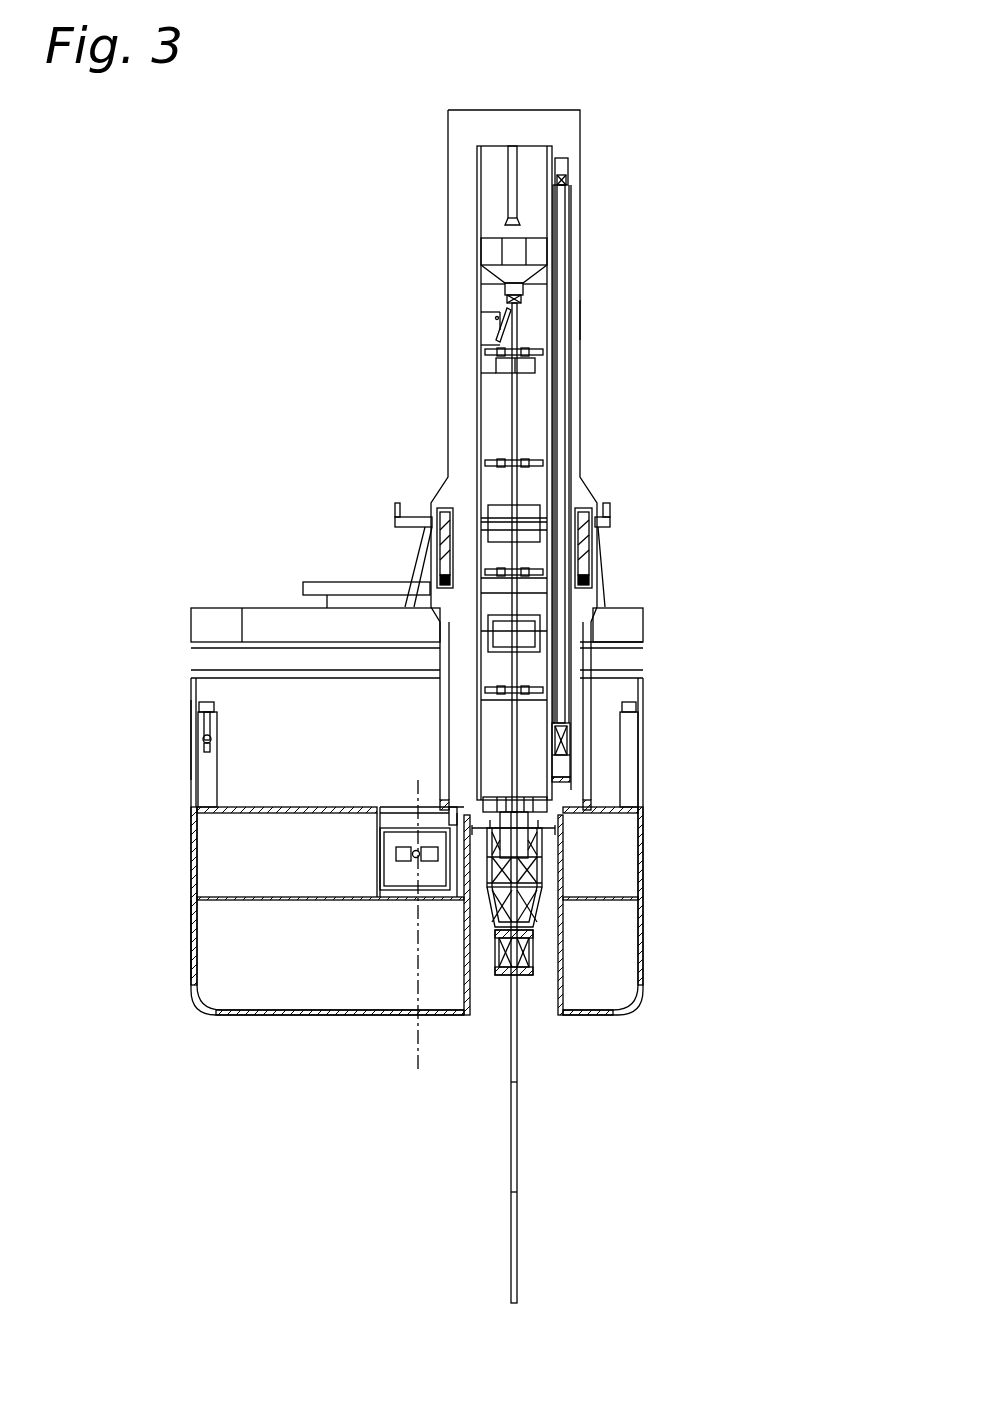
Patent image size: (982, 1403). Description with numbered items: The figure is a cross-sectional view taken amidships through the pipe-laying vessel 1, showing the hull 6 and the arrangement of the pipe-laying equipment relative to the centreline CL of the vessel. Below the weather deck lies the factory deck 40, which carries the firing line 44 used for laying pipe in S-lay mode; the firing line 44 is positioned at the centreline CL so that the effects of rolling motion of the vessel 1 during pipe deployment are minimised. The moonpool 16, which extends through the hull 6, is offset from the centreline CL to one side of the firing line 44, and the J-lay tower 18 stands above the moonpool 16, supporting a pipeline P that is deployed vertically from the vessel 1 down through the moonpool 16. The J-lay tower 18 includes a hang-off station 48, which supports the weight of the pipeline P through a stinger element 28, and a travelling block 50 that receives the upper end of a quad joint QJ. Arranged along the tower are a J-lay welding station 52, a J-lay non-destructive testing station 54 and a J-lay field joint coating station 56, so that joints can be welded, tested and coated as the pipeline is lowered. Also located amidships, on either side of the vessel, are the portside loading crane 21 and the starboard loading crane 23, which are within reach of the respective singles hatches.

The pipe-laying vessel 1 is at (650, 226).
The J-lay tower 18 is at (579, 323).
The travelling block 50 is at (516, 267).
The quad joint QJ is at (514, 413).
The J-lay welding station 52 is at (533, 512).
The J-lay non-destructive testing station 54 is at (529, 614).
The J-lay field joint coating station 56 is at (528, 745).
The starboard loading crane 23 is at (631, 777).
The hang-off station 48 is at (522, 847).
The portside loading crane 21 is at (201, 722).
The factory deck 40 is at (235, 805).
The hull 6 is at (191, 962).
The firing line 44 is at (407, 860).
The centreline CL is at (417, 1043).
The moonpool 16 is at (493, 995).
The stinger element 28 is at (529, 950).
The pipeline P is at (518, 1122).